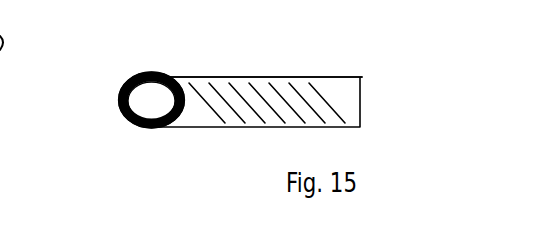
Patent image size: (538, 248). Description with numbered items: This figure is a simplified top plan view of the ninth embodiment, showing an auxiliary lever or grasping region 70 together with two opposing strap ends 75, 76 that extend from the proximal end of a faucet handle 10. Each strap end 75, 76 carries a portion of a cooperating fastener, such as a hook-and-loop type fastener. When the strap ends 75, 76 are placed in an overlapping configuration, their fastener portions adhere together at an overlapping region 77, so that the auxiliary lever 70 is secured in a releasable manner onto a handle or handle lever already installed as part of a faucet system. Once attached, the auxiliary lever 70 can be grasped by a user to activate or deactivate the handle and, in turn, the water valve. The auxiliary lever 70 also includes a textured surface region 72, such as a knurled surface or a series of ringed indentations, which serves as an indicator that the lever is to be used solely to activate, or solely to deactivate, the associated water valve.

The faucet handle 10 is at (228, 50).
The auxiliary lever 70 is at (360, 79).
The textured surface region 72 is at (262, 123).
The strap end 75 is at (143, 125).
The strap end 76 is at (122, 107).
The overlapping region 77 is at (132, 77).